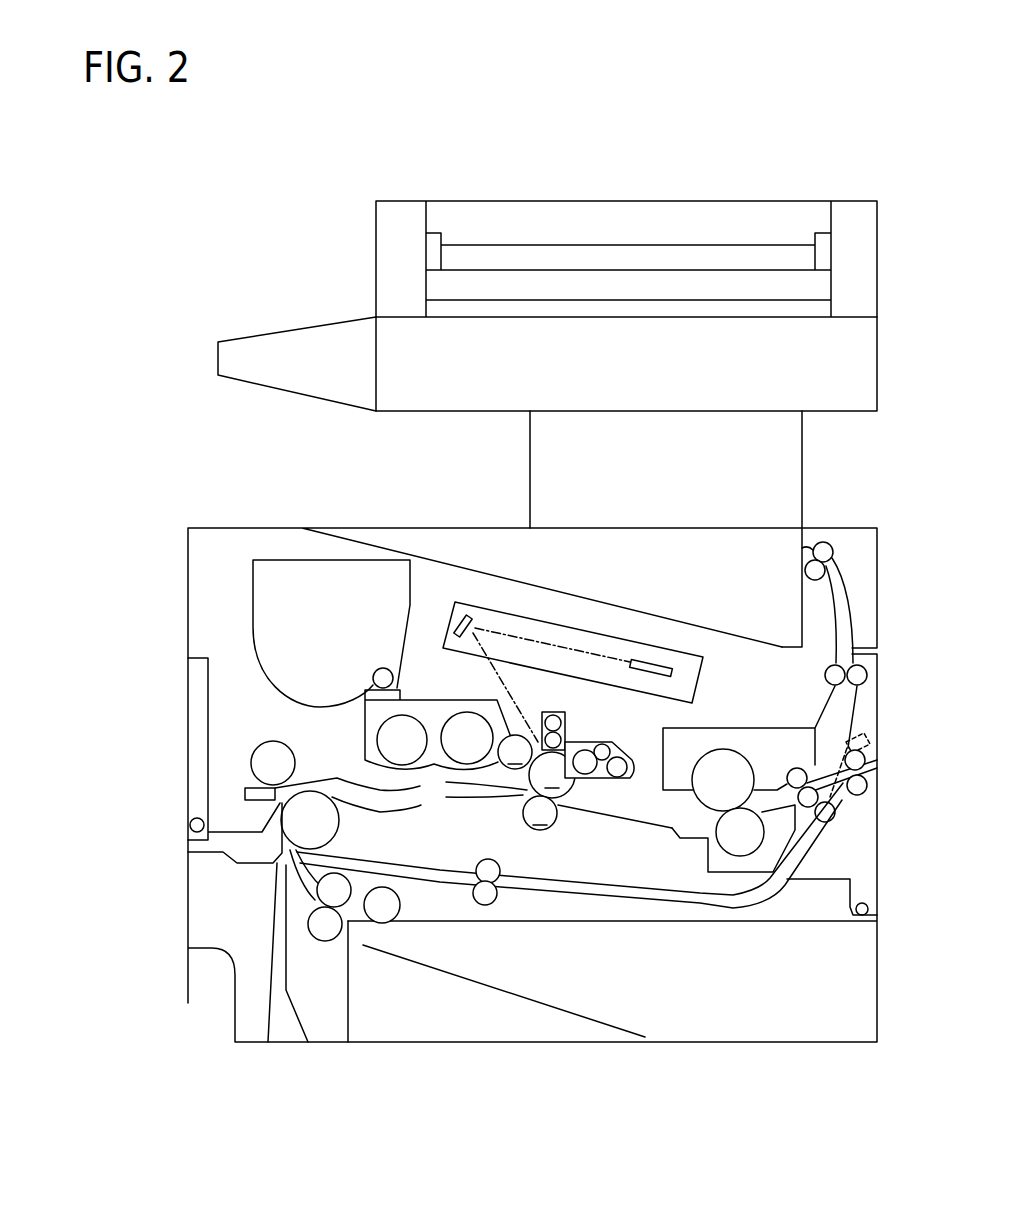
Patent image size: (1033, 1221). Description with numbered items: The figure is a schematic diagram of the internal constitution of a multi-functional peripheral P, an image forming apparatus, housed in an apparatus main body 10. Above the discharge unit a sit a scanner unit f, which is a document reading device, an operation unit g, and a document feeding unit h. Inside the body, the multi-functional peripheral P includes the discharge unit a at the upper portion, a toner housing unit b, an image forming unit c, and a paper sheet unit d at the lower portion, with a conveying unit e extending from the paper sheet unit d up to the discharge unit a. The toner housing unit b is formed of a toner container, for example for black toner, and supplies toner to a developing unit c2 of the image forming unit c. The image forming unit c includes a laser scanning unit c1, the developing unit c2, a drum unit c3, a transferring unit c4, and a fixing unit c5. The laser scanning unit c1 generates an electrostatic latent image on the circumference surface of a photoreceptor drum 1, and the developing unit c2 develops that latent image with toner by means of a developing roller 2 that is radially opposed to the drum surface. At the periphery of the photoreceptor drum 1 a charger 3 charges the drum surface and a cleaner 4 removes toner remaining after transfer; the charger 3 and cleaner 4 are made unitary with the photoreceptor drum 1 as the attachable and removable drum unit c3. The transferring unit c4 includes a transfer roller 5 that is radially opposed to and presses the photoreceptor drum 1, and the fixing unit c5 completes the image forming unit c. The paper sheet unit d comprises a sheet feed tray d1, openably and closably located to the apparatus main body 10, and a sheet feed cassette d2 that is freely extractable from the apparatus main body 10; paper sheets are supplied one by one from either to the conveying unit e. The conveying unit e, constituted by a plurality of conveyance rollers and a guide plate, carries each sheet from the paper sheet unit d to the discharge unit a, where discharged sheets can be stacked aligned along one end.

The multi-functional peripheral P is at (205, 213).
The apparatus main body 10 is at (188, 581).
The document feeding unit h is at (376, 252).
The scanner unit f is at (877, 362).
The operation unit g is at (218, 359).
The discharge unit a is at (596, 612).
The toner housing unit b is at (250, 588).
The image forming unit c is at (589, 768).
The laser scanning unit c1 is at (673, 633).
The developing unit c2 is at (437, 700).
The drum unit c3 is at (557, 707).
The transferring unit c4 is at (586, 833).
The fixing unit c5 is at (742, 722).
The conveying unit e is at (342, 780).
The paper sheet unit d is at (473, 850).
The sheet feed tray d1 is at (186, 766).
The sheet feed cassette d2 is at (357, 960).
The photoreceptor drum 1 is at (552, 775).
The developing roller 2 is at (515, 752).
The charger 3 is at (553, 708).
The cleaner 4 is at (600, 787).
The transfer roller 5 is at (552, 832).